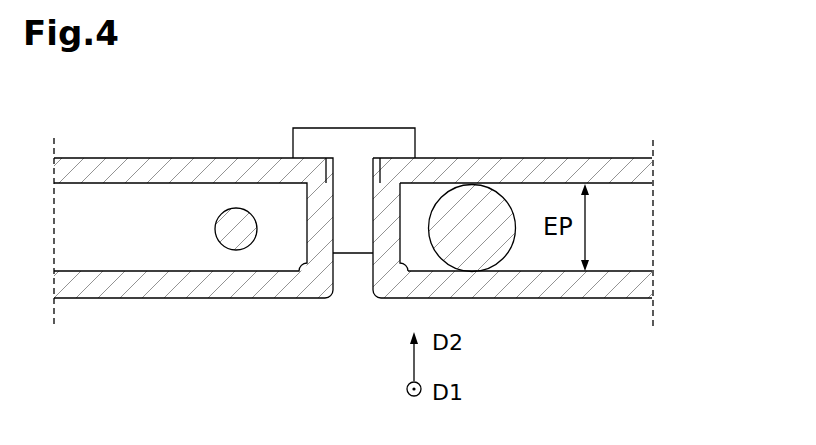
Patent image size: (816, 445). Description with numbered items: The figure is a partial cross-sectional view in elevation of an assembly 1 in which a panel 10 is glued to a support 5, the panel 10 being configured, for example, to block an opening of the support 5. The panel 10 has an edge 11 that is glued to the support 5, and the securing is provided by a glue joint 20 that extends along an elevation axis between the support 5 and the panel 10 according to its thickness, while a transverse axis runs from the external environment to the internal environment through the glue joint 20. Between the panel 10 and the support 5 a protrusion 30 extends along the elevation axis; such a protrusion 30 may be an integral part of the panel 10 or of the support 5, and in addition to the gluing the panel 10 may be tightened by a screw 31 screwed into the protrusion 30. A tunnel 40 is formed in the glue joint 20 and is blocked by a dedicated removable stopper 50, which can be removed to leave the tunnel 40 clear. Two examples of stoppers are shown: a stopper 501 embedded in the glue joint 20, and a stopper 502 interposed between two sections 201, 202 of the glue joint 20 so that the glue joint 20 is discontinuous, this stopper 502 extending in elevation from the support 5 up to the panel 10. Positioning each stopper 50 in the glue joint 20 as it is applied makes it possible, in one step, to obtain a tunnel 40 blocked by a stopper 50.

The assembly 1 is at (607, 328).
The support 5 is at (632, 283).
The panel 10 is at (630, 163).
The edge 11 is at (573, 167).
The glue joint 20 is at (637, 247).
The first section of the glue joint 201 is at (540, 260).
The second section of the glue joint 202 is at (420, 200).
The protrusion 30 is at (383, 268).
The screw 31 is at (318, 140).
The tunnel 40 is at (348, 182).
The removable stopper 50 is at (348, 182).
The embedded stopper 501 is at (237, 222).
The interposed stopper 502 is at (465, 220).